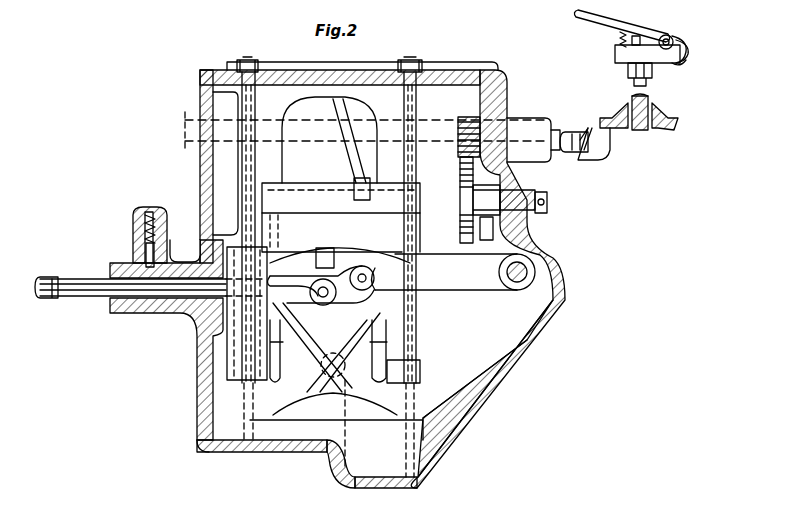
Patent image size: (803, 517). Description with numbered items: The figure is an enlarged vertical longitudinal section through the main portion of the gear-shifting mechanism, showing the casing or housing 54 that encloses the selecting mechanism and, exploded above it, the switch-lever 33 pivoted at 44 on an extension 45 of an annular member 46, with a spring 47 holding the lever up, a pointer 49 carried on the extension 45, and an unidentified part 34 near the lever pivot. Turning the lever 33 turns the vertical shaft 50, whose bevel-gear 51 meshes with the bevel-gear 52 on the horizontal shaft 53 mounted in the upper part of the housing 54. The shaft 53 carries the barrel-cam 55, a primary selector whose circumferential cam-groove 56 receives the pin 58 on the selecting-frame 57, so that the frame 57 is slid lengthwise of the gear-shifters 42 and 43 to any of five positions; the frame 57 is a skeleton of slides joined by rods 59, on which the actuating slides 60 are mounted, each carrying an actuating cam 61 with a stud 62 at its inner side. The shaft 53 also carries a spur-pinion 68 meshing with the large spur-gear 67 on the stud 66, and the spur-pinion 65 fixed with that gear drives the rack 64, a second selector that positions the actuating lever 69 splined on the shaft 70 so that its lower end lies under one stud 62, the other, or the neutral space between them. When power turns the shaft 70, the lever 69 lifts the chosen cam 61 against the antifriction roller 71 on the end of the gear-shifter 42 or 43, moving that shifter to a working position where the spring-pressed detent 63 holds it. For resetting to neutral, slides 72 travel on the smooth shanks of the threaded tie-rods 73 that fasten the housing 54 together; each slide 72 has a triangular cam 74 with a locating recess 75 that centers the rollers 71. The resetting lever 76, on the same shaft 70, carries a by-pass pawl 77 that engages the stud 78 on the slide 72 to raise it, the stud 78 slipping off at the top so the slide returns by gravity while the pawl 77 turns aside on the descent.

The switch-lever 33 is at (580, 16).
The pivot pin 34 is at (636, 45).
The gear-shifter 42 is at (92, 298).
The gear-shifter 43 is at (43, 298).
The pivot 44 is at (668, 40).
The extension 45 is at (680, 64).
The annular member 46 is at (630, 74).
The spring 47 is at (618, 42).
The pointer 49 is at (688, 52).
The vertical shaft 50 is at (640, 128).
The bevel-gear 51 is at (660, 118).
The bevel-gear 52 is at (605, 158).
The horizontal shaft 53 is at (578, 150).
The casing or housing 54 is at (565, 275).
The barrel-cam 55 is at (329, 140).
The cam-groove 56 is at (330, 148).
The selecting-frame 57 is at (341, 198).
The pin 58 is at (342, 184).
The rods 59 is at (262, 229).
The actuating slide 60 is at (336, 400).
The actuating cam 61 is at (328, 347).
The stud 62 is at (345, 348).
The spring-pressed detent 63 is at (147, 258).
The rack 64 is at (503, 228).
The spur-pinion 65 is at (486, 193).
The stud 66 is at (520, 197).
The spur-gear 67 is at (460, 184).
The spur-pinion 68 is at (480, 122).
The actuating lever 69 is at (465, 370).
The shaft 70 is at (522, 276).
The antifriction roller 71 is at (322, 305).
The resetting slide 72 is at (240, 350).
The threaded tie-rod 73 is at (425, 80).
The triangular cam 74 is at (368, 291).
The locating recess 75 is at (373, 290).
The resetting lever 76 is at (505, 255).
The by-pass pawl 77 is at (322, 274).
The stud 78 is at (325, 248).